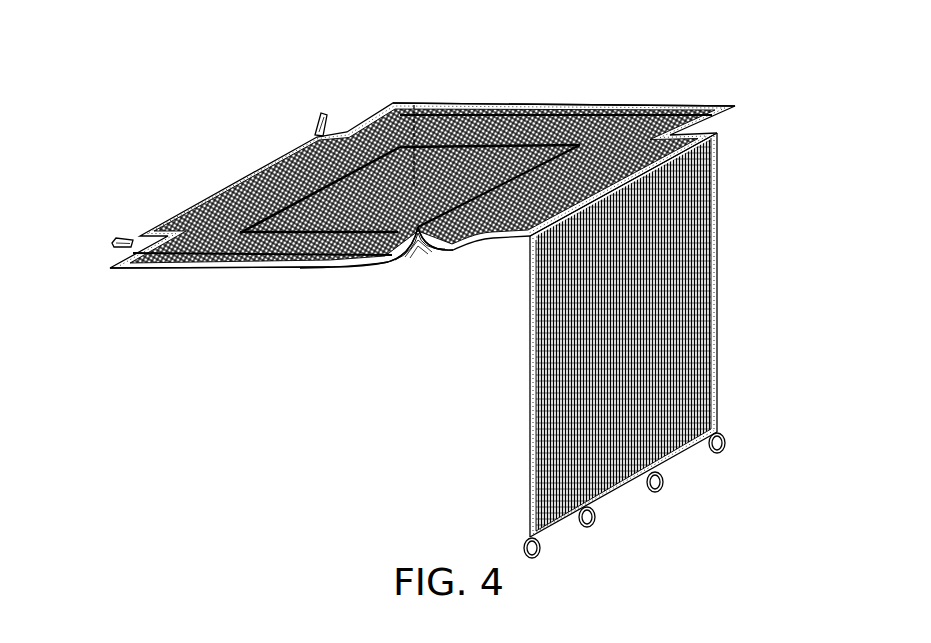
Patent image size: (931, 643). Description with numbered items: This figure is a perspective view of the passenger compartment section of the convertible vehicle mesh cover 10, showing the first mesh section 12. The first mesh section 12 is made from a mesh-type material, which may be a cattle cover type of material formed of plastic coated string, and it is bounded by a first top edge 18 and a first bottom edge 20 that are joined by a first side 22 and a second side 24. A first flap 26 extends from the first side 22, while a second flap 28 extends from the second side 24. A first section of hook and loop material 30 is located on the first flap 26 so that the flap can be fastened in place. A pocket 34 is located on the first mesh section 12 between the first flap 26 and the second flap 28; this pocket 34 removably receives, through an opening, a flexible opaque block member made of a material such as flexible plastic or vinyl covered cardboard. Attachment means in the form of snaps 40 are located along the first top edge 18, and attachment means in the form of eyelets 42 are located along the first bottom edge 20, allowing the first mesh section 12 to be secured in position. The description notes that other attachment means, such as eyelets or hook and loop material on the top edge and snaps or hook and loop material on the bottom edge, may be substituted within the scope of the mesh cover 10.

The convertible vehicle mesh cover 10 is at (262, 428).
The first mesh section 12 is at (190, 298).
The first top edge 18 is at (224, 186).
The first bottom edge 20 is at (628, 482).
The first side 22 is at (530, 402).
The second side 24 is at (717, 325).
The first flap 26 is at (252, 268).
The second flap 28 is at (655, 105).
The first section of hook and loop material 30 is at (423, 257).
The pocket 34 is at (418, 105).
The snaps 40 is at (322, 112).
The eyelets 42 is at (719, 452).